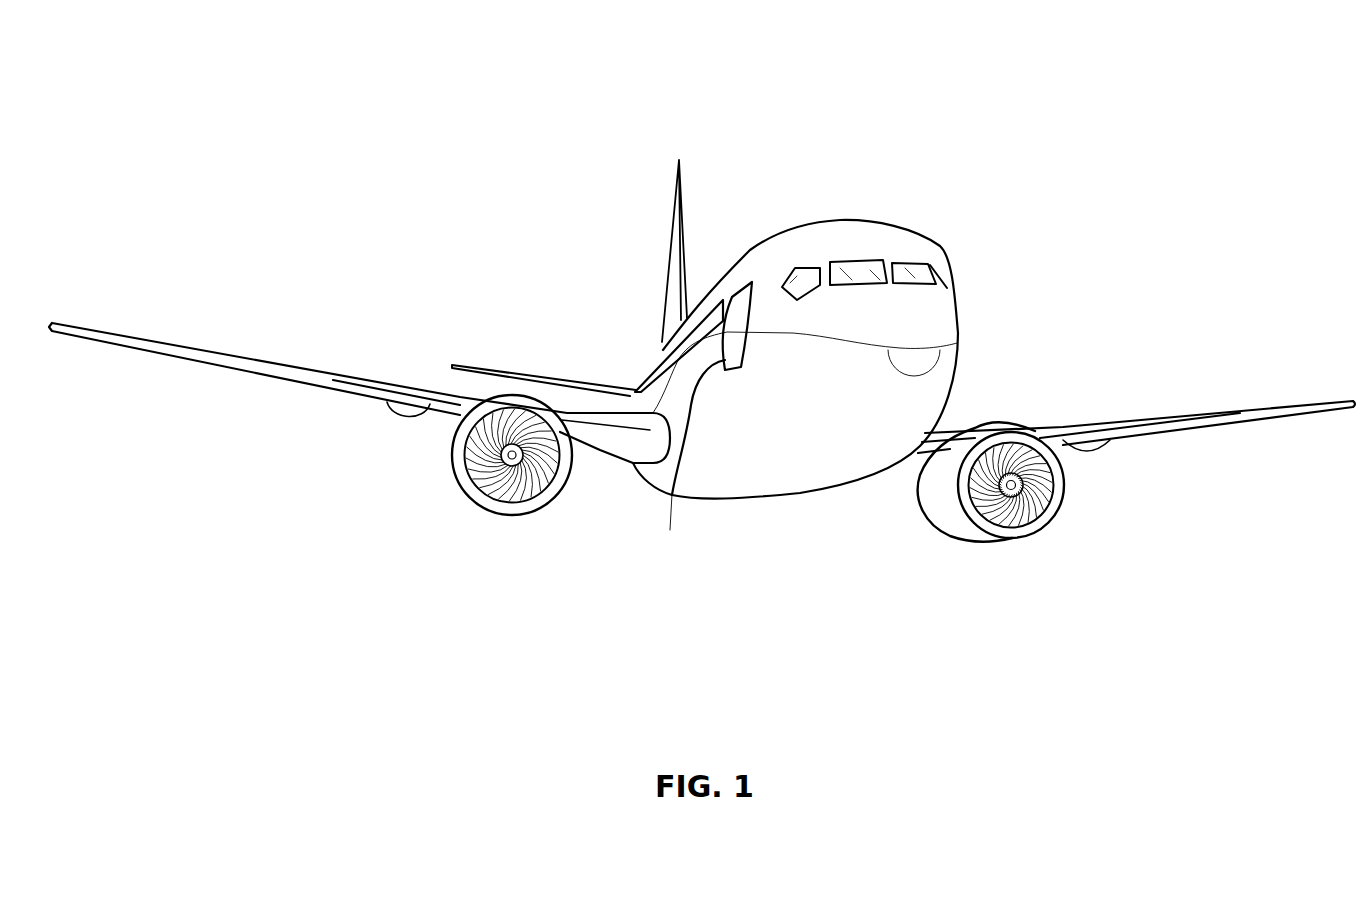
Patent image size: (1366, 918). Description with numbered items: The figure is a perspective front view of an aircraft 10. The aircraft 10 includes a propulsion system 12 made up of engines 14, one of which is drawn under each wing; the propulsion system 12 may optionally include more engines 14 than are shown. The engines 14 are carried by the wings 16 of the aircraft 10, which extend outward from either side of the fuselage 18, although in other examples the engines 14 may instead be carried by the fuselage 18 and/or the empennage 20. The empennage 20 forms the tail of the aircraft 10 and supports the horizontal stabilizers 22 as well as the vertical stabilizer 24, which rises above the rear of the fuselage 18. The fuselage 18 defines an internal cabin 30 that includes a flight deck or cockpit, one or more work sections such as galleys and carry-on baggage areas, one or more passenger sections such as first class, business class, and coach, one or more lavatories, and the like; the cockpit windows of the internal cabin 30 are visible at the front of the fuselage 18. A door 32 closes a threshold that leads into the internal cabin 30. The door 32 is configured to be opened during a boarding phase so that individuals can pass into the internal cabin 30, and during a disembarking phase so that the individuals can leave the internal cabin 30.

The aircraft 10 is at (376, 89).
The propulsion system 12 is at (404, 560).
The engines 14 is at (509, 517).
The wings 16 is at (225, 357).
The fuselage 18 is at (957, 308).
The empennage 20 is at (660, 340).
The horizontal stabilizers 22 is at (500, 367).
The vertical stabilizer 24 is at (675, 208).
The internal cabin 30 is at (858, 268).
The door 32 is at (671, 530).